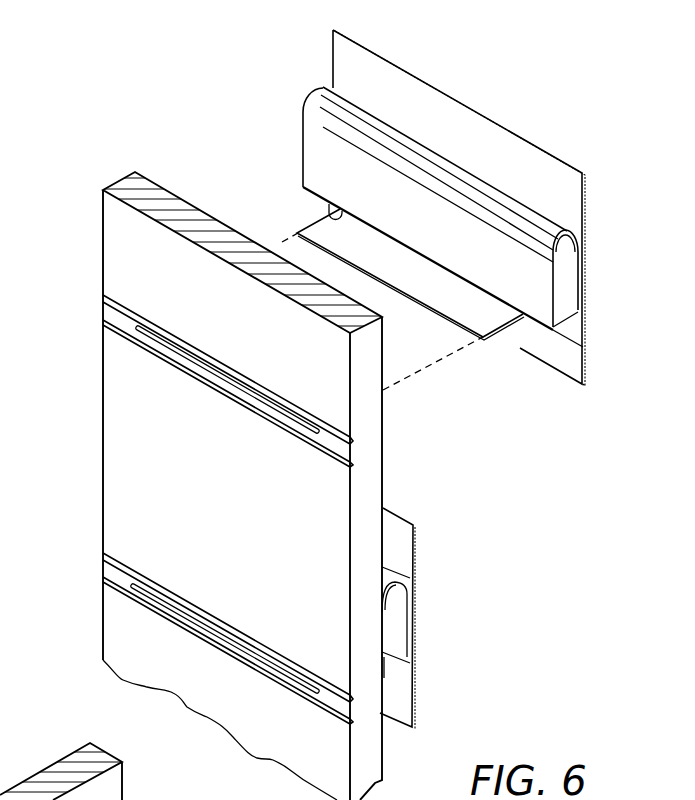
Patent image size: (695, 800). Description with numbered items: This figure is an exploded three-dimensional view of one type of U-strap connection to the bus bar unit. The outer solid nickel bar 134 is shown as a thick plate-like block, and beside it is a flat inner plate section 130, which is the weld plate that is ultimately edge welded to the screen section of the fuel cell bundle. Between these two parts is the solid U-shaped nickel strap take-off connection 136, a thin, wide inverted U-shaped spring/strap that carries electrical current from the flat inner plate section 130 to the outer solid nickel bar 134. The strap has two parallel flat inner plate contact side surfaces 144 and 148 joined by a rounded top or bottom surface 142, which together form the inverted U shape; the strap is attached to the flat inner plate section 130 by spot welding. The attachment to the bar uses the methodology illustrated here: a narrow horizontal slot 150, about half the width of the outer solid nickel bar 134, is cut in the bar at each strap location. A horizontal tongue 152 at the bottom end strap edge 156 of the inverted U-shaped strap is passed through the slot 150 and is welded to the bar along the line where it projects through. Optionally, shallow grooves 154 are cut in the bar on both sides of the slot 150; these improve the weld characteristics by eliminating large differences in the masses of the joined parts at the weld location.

The flat inner plate section 130 is at (500, 126).
The outer solid nickel bar 134 is at (117, 250).
The solid U-shaped nickel strap take-off connection 136 is at (315, 145).
The rounded top or bottom surface 142 is at (570, 240).
The flat inner plate contact side surface 144 is at (538, 303).
The flat inner plate contact side surface 148 is at (570, 278).
The narrow horizontal slot 150 is at (138, 326).
The horizontal tongue 152 is at (490, 318).
The shallow groove 154 is at (100, 577).
The bottom end strap edge 156 is at (330, 215).